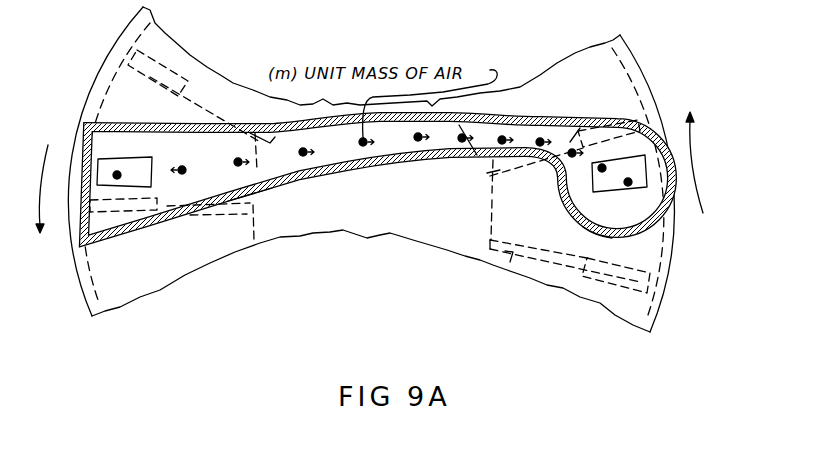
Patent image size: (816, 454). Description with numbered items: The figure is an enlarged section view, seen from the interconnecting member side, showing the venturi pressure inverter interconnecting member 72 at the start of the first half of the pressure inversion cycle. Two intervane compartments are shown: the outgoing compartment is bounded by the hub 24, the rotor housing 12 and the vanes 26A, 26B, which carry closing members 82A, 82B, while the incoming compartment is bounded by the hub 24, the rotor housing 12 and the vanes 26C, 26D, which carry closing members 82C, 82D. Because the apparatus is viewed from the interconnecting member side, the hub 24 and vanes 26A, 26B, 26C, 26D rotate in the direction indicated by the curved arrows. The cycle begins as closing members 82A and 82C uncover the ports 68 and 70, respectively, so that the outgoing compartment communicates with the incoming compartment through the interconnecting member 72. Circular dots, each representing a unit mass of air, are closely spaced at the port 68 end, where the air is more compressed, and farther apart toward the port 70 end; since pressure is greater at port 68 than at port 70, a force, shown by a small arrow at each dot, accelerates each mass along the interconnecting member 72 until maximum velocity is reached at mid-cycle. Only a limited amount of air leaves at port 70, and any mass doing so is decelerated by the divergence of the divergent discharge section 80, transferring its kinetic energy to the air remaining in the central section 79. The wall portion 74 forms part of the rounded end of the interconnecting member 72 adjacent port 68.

The rotor housing 12 is at (74, 266).
The hub 24 is at (493, 208).
The vane 26A is at (499, 176).
The vane 26B is at (510, 258).
The vane 26C is at (190, 217).
The vane 26D is at (198, 89).
The port 68 is at (614, 188).
The port 70 is at (131, 173).
The interconnecting member 72 is at (312, 170).
The chamber wall 74 is at (580, 224).
The central section 79 is at (368, 164).
The divergent discharge section 80 is at (255, 188).
The closing member 82A is at (633, 118).
The closing member 82B is at (597, 285).
The closing member 82C is at (123, 228).
The closing member 82D is at (131, 78).